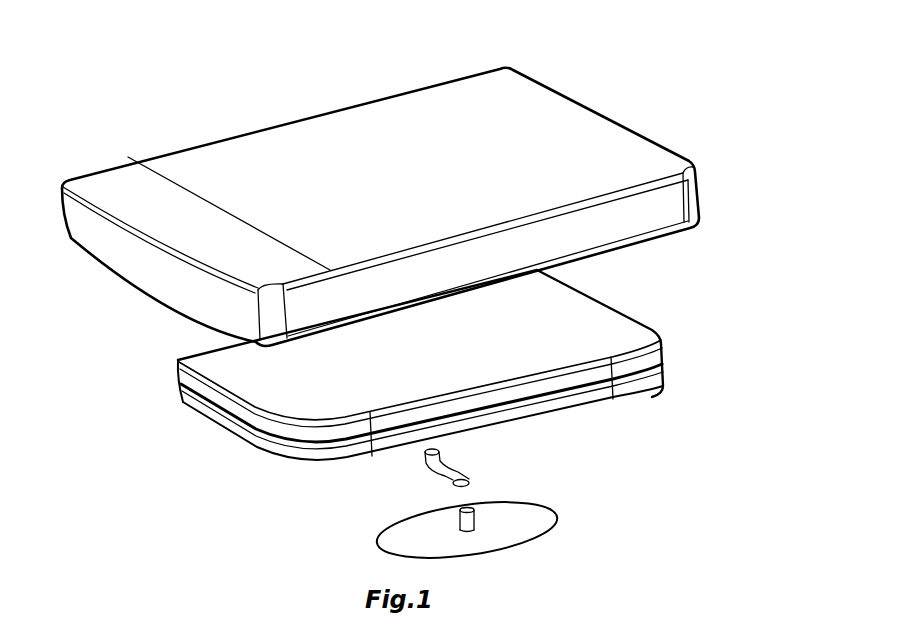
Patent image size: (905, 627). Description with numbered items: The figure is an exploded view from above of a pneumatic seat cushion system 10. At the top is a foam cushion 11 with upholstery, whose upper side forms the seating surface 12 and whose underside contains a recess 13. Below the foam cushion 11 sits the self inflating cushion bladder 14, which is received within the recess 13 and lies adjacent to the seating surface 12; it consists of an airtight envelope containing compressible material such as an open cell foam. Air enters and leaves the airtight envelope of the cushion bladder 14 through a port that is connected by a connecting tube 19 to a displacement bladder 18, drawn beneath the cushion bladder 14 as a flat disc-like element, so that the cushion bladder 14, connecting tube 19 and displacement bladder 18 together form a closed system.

The pneumatic seat cushion system 10 is at (594, 91).
The foam cushion 11 is at (98, 165).
The seating surface 12 is at (391, 182).
The recess 13 is at (320, 120).
The self inflating cushion bladder 14 is at (578, 318).
The displacement bladder 18 is at (538, 524).
The connecting tube 19 is at (482, 467).